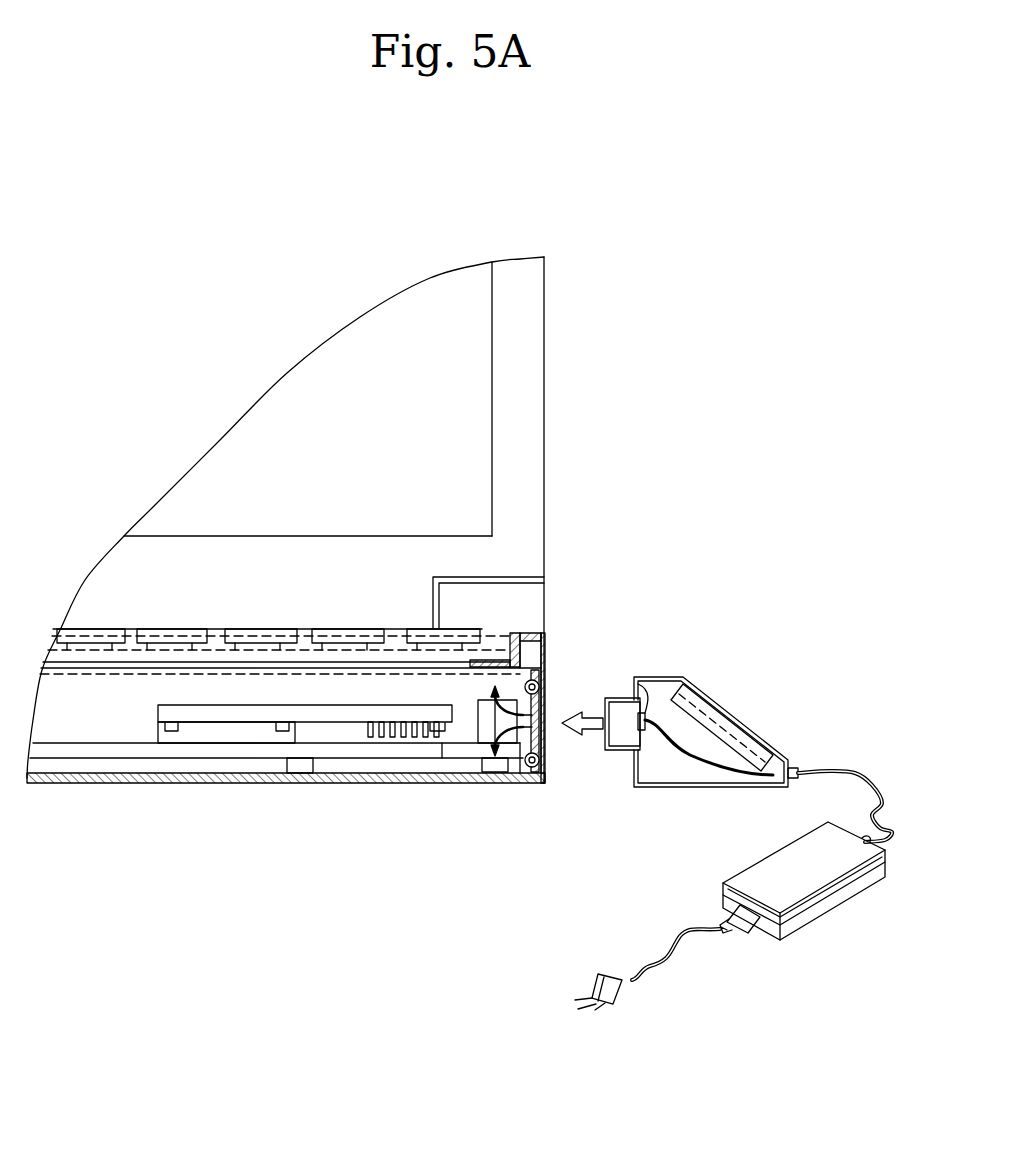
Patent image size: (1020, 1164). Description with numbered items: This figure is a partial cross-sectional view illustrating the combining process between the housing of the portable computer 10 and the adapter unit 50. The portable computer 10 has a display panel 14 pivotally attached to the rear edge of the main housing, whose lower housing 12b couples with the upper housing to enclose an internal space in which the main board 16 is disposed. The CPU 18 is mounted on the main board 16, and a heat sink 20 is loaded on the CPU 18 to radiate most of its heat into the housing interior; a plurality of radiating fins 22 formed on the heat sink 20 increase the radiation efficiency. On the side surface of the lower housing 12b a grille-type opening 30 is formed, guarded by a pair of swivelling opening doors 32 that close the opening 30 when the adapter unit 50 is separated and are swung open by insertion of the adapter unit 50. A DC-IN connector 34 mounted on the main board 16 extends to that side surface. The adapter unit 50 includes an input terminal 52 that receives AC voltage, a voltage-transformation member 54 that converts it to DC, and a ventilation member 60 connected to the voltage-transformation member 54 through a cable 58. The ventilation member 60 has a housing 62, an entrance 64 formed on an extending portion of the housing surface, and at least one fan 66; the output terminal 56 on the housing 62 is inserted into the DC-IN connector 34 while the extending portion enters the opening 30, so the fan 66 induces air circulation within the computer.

The portable computer 10 is at (474, 197).
The lower housing 12b is at (180, 784).
The display panel 14 is at (528, 341).
The main board 16 is at (418, 752).
The CPU 18 is at (220, 740).
The heat sink 20 is at (325, 712).
The radiating fin 22 is at (372, 737).
The opening 30 is at (545, 713).
The opening door 32 is at (539, 683).
The DC-IN connector 34 is at (480, 733).
The adapter unit 50 is at (749, 812).
The input terminal 52 is at (748, 925).
The voltage-transformation member 54 is at (750, 870).
The output terminal 56 is at (640, 690).
The cable 58 is at (878, 790).
The ventilation member 60 is at (699, 696).
The housing 62 is at (648, 627).
The entrance 64 is at (607, 748).
The fan 66 is at (767, 745).